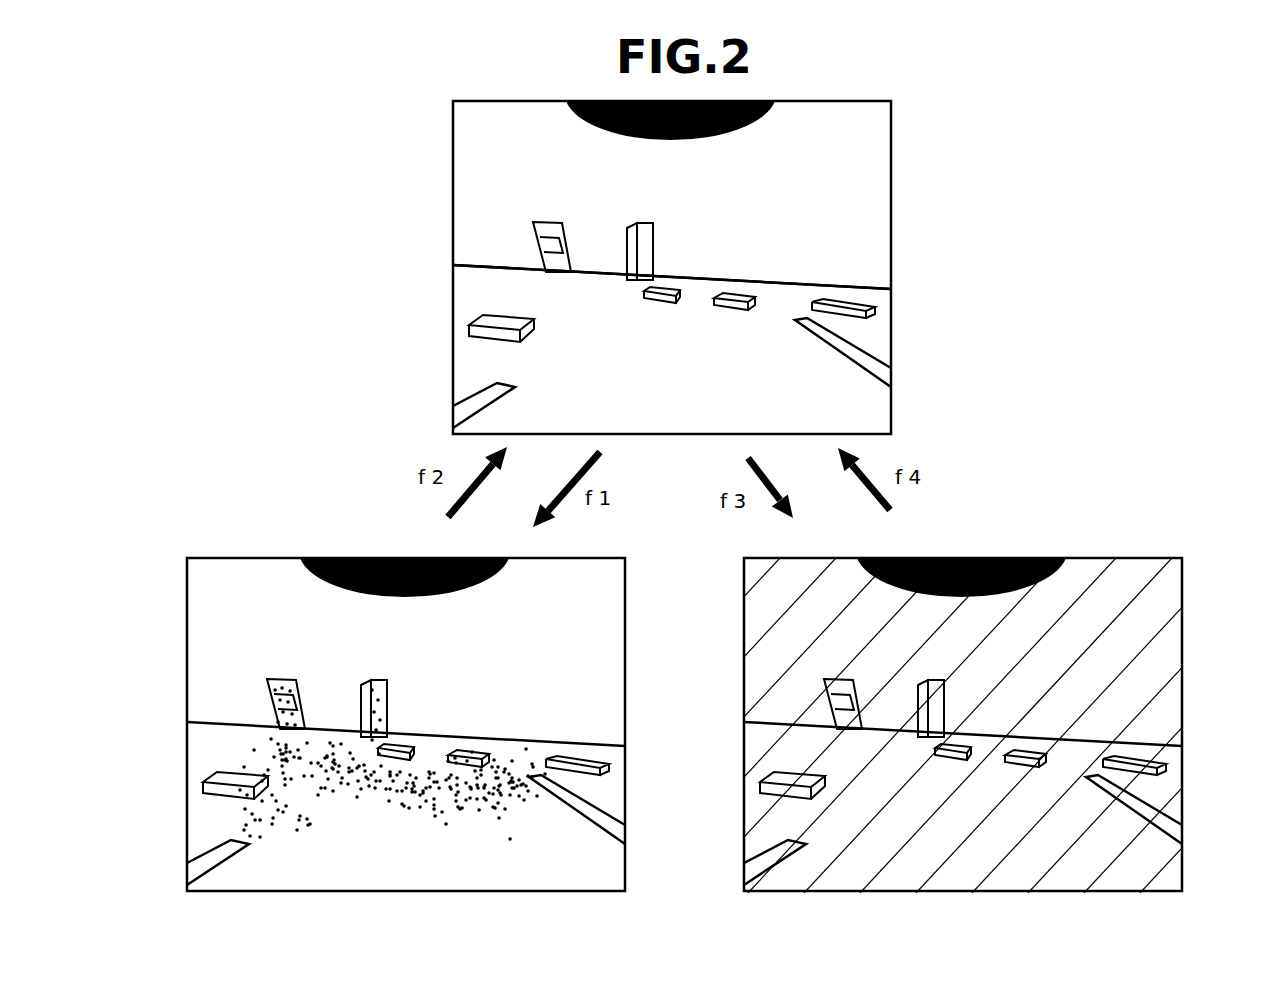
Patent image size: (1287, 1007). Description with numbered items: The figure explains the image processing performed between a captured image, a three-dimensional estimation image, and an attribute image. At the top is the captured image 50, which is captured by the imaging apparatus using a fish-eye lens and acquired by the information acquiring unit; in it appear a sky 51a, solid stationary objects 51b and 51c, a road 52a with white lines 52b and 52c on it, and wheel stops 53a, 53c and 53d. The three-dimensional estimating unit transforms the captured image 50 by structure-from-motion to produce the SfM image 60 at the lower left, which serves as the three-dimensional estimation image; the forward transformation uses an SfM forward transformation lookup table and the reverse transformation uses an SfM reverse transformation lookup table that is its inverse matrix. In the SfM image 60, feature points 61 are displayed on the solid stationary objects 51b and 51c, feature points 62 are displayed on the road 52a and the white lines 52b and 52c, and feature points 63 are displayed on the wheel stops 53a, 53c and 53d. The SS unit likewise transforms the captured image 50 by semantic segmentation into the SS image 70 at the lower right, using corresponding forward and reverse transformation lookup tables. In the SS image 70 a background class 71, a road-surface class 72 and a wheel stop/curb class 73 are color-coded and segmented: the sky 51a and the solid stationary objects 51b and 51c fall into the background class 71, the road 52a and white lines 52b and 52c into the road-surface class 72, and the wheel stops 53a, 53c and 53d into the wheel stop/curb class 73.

The captured image 50 is at (893, 173).
The sky 51a is at (875, 225).
The solid stationary object 51b is at (645, 222).
The solid stationary object 51c is at (540, 228).
The road 52a is at (885, 340).
The white line 52b is at (475, 398).
The white line 52c is at (883, 378).
The wheel stop 53a is at (495, 315).
The wheel stop 53c is at (735, 300).
The wheel stop 53d is at (840, 305).
The SfM image 60 is at (232, 558).
The feature points 61 is at (273, 678).
The feature points 62 is at (287, 820).
The feature points 63 is at (243, 793).
The SS image 70 is at (1130, 557).
The background class 71 is at (1168, 672).
The road-surface class 72 is at (1162, 802).
The wheel stop/curb class 73 is at (773, 790).